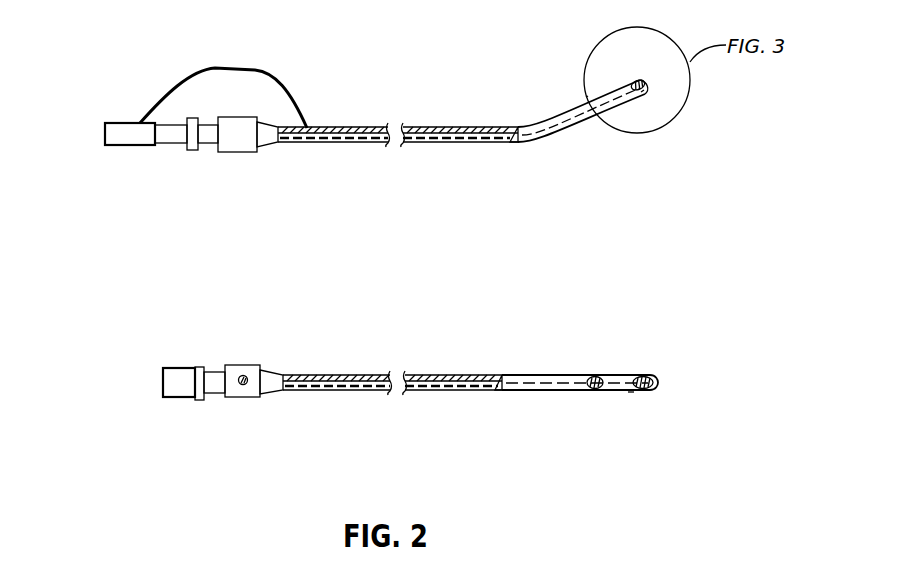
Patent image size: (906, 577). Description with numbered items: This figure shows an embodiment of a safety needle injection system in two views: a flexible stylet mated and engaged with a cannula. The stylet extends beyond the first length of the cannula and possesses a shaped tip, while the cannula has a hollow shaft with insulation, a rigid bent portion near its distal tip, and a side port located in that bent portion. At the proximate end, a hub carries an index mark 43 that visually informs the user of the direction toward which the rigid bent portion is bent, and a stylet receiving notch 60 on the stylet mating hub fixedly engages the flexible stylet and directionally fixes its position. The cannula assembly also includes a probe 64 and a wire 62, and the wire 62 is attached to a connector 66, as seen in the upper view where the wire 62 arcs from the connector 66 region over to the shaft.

The index mark 43 is at (243, 388).
The stylet receiving notch 60 is at (211, 373).
The wire 62 is at (228, 66).
The probe 64 is at (355, 127).
The connector 66 is at (103, 143).